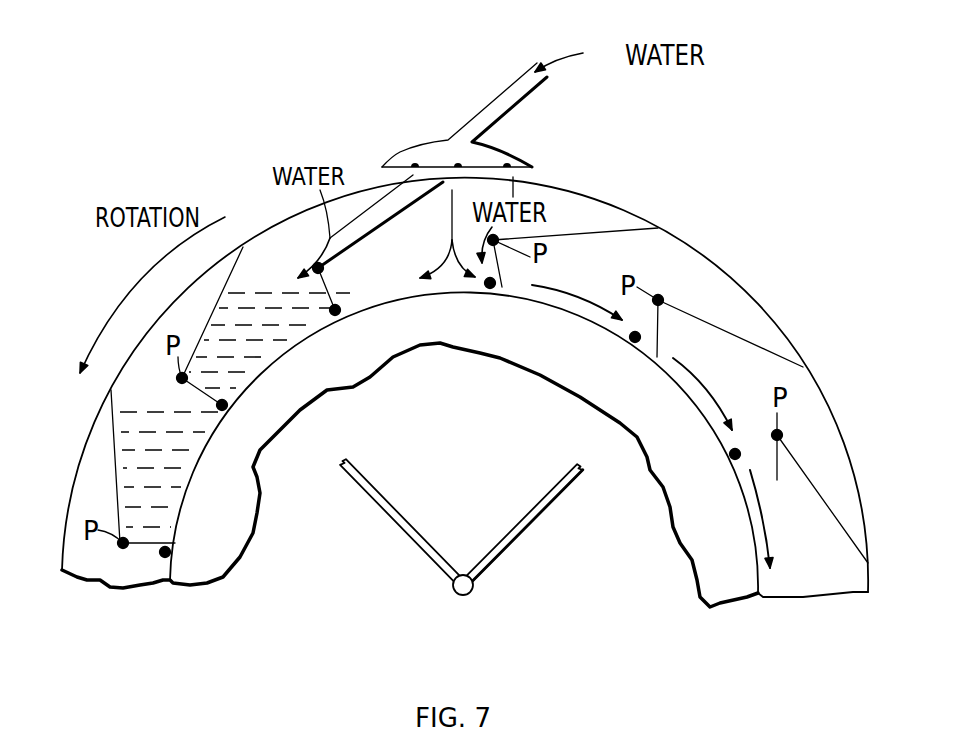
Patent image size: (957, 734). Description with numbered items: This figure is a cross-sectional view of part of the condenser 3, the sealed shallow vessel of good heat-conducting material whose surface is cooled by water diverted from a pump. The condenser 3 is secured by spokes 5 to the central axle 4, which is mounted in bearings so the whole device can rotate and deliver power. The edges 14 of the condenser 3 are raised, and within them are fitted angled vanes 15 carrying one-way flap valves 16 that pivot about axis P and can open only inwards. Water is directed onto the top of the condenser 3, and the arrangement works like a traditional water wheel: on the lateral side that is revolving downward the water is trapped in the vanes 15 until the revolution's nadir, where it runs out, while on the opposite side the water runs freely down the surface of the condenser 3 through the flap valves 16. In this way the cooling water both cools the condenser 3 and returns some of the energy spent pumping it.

The condenser 3 is at (260, 420).
The axle 4 is at (465, 580).
The spokes 5 is at (527, 515).
The raised edges 14 is at (837, 430).
The angled vanes 15 is at (112, 445).
The one-way flap valves 16 is at (147, 545).